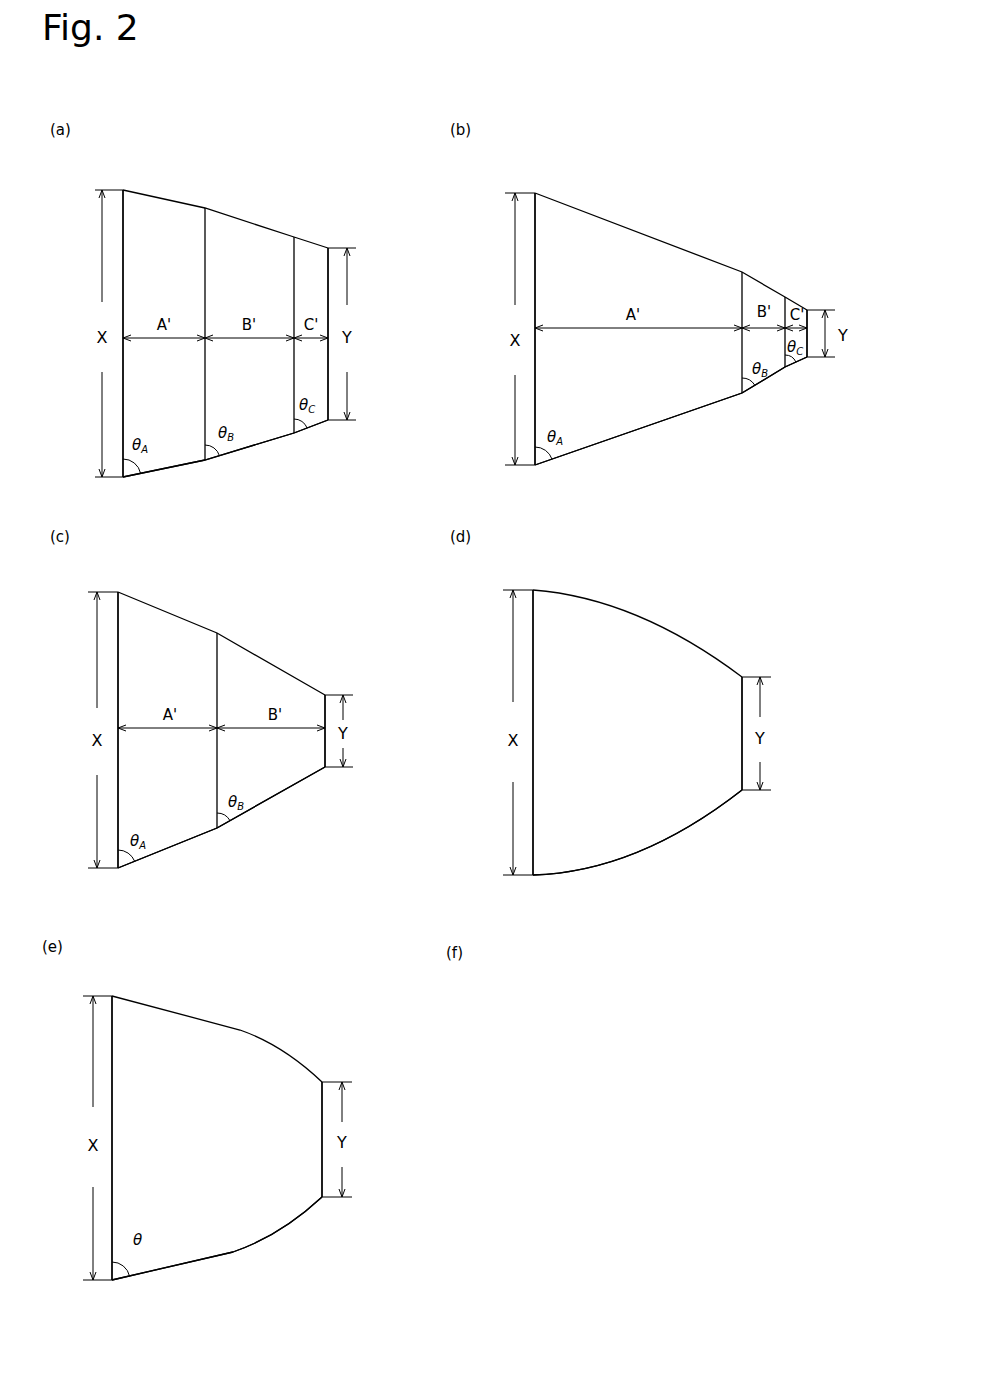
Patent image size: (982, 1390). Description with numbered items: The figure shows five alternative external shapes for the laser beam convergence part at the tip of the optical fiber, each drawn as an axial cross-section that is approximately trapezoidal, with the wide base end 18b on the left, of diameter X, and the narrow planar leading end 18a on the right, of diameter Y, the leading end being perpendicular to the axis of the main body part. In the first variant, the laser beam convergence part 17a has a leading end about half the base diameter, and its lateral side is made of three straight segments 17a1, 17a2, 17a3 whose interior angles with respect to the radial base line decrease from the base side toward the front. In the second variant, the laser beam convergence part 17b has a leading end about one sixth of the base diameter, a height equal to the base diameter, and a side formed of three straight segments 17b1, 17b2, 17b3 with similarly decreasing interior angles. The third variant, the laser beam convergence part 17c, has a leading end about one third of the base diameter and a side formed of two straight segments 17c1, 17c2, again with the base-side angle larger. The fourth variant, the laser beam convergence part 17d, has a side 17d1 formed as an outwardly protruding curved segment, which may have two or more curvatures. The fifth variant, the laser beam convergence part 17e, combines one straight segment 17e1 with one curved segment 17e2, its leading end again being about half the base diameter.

The laser beam convergence part 17a is at (238, 199).
The first straight segment 17a1 is at (125, 478).
The second straight segment 17a2 is at (206, 462).
The third straight segment 17a3 is at (292, 440).
The laser beam convergence part 17b is at (700, 221).
The first straight segment 17b1 is at (638, 429).
The second straight segment 17b2 is at (744, 396).
The third straight segment 17b3 is at (788, 371).
The laser beam convergence part 17c is at (256, 649).
The first straight segment 17c1 is at (128, 868).
The second straight segment 17c2 is at (218, 830).
The laser beam convergence part 17d is at (655, 610).
The curved side 17d1 is at (676, 831).
The laser beam convergence part 17e is at (246, 1020).
The straight segment 17e1 is at (182, 1266).
The curved segment 17e2 is at (283, 1227).
The leading end 18a is at (323, 272).
The base end 18b is at (125, 228).